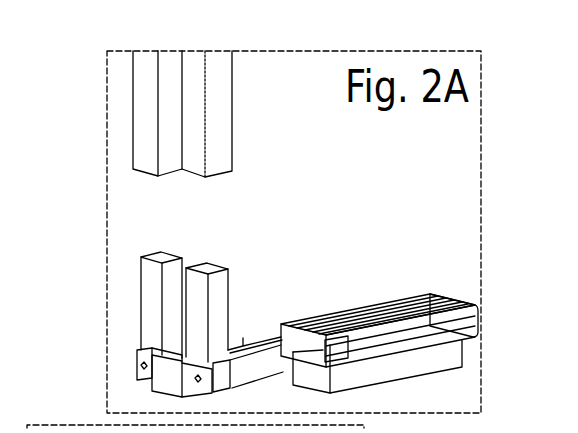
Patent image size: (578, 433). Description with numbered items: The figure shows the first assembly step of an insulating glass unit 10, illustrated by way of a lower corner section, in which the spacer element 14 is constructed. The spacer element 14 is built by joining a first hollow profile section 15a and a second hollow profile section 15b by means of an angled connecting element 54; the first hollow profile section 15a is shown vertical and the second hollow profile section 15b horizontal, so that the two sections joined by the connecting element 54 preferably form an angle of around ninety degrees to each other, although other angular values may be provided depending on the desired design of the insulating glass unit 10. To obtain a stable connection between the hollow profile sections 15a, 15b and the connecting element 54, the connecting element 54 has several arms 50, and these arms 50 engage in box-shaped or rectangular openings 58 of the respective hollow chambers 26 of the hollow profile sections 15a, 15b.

The insulating glass unit 10 is at (455, 167).
The spacer element 14 is at (305, 209).
The first hollow profile section 15a is at (223, 152).
The second hollow profile section 15b is at (413, 320).
The hollow chamber 26 is at (333, 312).
The arm 50 is at (213, 283).
The connecting element 54 is at (152, 312).
The opening 58 is at (357, 362).